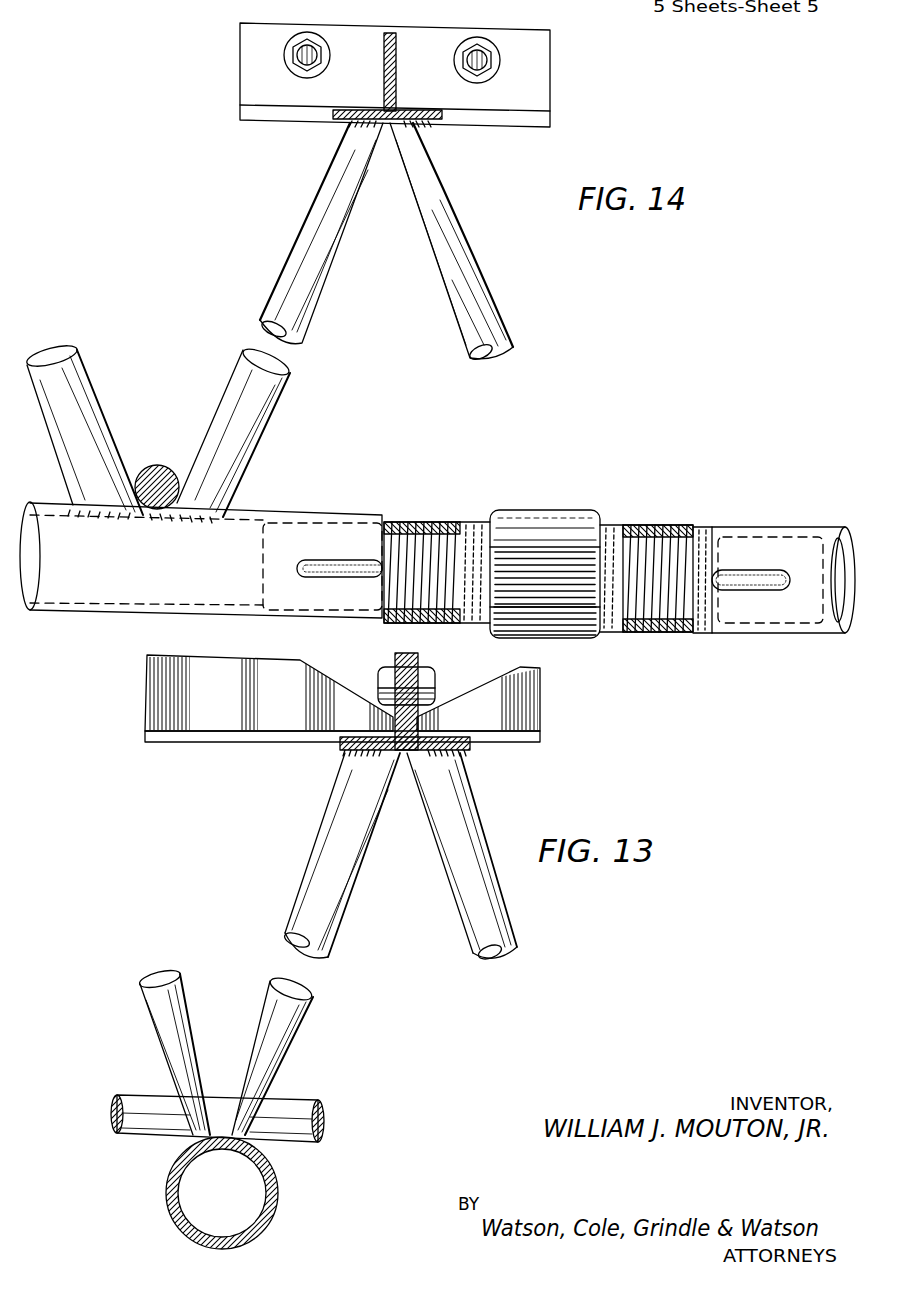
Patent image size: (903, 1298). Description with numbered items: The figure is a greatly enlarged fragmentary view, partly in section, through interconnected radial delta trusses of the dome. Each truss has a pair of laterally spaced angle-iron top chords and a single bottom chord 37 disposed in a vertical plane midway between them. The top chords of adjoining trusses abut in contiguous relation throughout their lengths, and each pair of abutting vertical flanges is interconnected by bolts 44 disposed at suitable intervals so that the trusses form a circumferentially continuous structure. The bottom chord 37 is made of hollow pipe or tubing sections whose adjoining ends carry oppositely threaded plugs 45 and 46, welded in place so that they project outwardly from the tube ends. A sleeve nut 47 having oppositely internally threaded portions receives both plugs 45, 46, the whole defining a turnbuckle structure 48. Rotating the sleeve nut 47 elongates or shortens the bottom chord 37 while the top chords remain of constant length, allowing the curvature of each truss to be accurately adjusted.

In FIG. 13, the bottom chord 37 is at (207, 580).
In FIG. 14, the bolts 44 is at (300, 60).
In FIG. 13, the bolts 44 is at (437, 688).
In FIG. 13, the threaded plug 45 is at (470, 520).
In FIG. 13, the threaded plug 46 is at (657, 634).
In FIG. 13, the sleeve nut 47 is at (548, 636).
In FIG. 13, the turnbuckle structure 48 is at (556, 505).